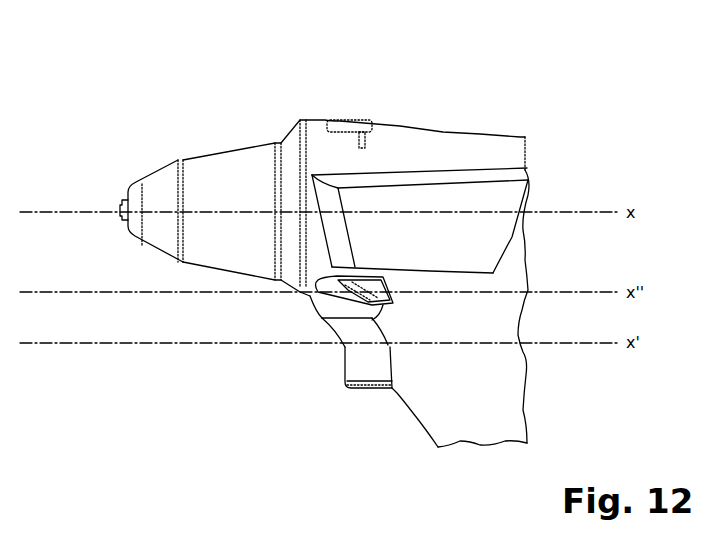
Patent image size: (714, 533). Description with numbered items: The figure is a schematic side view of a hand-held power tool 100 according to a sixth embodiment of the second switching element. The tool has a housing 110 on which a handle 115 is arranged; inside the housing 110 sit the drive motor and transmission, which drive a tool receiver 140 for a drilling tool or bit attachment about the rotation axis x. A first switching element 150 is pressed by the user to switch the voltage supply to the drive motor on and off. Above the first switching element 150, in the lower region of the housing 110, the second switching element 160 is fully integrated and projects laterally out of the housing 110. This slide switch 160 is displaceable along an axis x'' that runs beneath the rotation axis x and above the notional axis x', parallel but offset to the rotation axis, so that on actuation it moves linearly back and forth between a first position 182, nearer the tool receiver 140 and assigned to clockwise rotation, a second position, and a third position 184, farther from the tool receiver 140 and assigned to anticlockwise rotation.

The hand-held power tool 100 is at (393, 98).
The tool receiver 140 is at (157, 203).
The housing 110 is at (497, 186).
The first position 182 is at (320, 300).
The third position 184 is at (393, 302).
The second switching element 160 is at (380, 303).
The first switching element 150 is at (367, 370).
The handle 115 is at (500, 400).